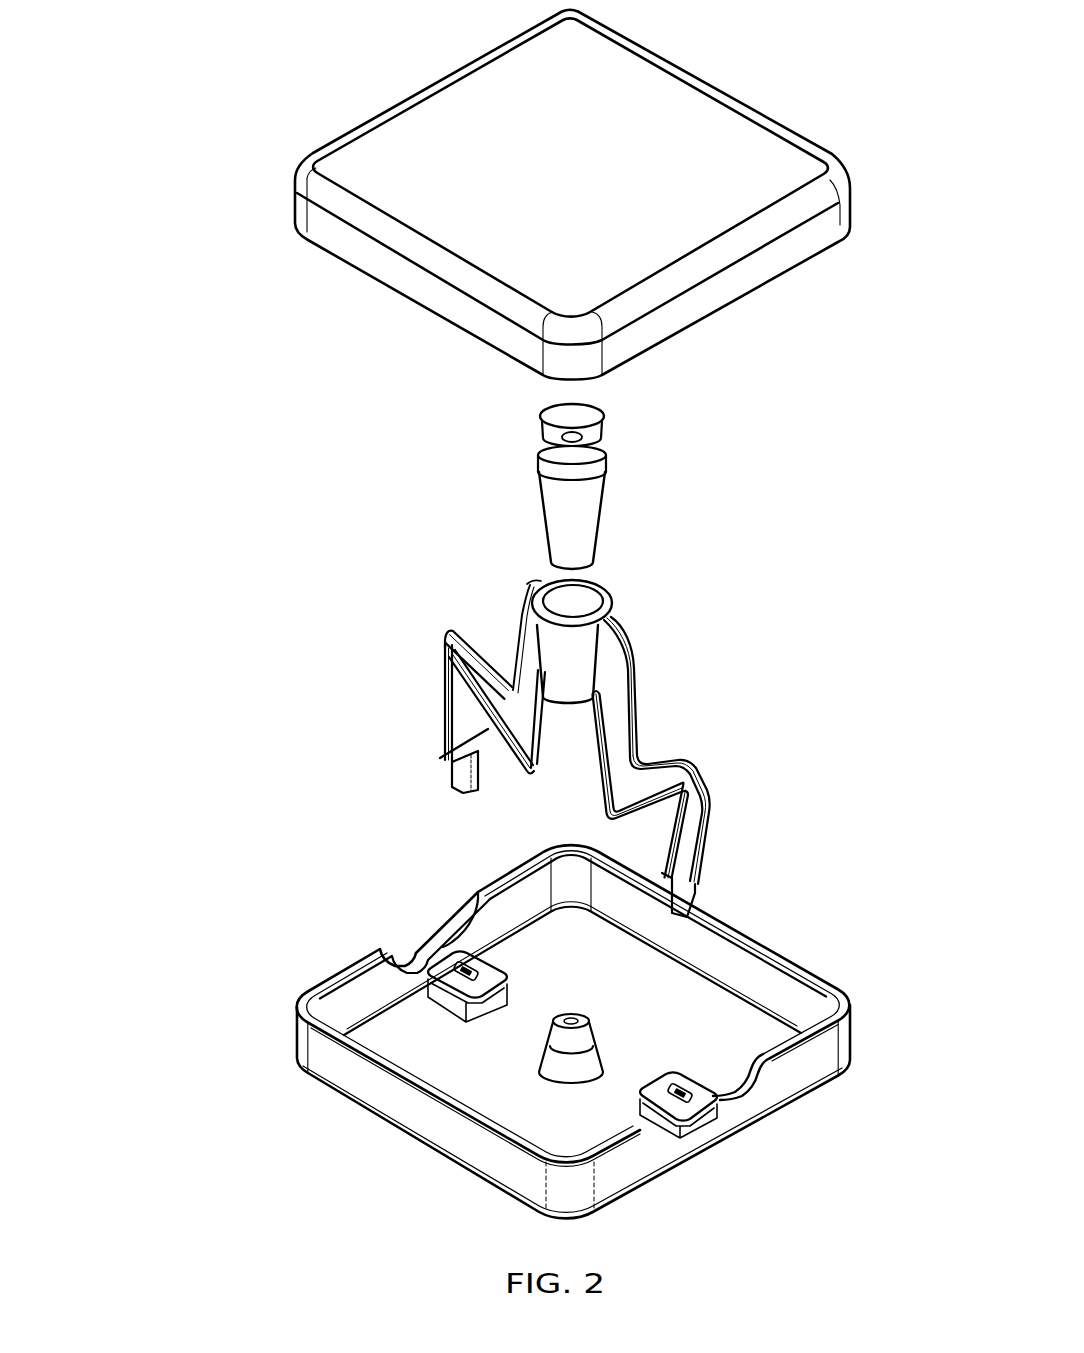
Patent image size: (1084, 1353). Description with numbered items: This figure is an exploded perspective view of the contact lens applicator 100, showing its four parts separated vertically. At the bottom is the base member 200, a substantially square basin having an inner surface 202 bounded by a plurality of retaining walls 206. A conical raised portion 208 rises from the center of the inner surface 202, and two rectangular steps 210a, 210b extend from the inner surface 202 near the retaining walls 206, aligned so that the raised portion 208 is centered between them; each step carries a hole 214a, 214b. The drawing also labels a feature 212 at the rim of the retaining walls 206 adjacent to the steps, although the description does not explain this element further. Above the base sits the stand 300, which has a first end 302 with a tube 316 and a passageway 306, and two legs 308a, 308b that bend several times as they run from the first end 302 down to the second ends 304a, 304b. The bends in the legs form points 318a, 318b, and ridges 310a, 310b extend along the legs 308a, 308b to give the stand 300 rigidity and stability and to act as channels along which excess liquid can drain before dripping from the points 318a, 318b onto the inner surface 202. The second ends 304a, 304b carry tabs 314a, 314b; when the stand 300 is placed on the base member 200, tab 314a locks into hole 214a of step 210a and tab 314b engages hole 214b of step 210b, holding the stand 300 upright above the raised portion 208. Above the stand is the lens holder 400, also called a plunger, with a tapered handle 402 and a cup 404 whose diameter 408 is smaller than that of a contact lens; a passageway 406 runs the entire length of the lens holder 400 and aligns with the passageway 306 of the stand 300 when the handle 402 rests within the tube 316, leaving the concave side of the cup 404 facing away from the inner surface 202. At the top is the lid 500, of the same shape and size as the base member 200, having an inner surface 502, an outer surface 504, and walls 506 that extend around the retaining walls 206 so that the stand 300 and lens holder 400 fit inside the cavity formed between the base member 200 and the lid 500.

The contact lens applicator 100 is at (496, 619).
The base member 200 is at (551, 1023).
The inner surface 202 is at (470, 1067).
The retaining walls 206 is at (337, 1010).
The raised portion 208 is at (565, 1047).
The step 210a is at (734, 1139).
The step 210b is at (483, 920).
The wall recess 212 is at (415, 960).
The hole 214a is at (713, 1110).
The hole 214b is at (475, 967).
The stand 300 is at (580, 743).
The first end 302 is at (602, 603).
The second end 304a is at (695, 943).
The second end 304b is at (458, 792).
The passageway 306 is at (575, 605).
The leg 308a is at (613, 726).
The leg 308b is at (462, 697).
The ridge 310a is at (700, 773).
The ridge 310b is at (445, 756).
The tab 314a is at (697, 888).
The tab 314b is at (452, 763).
The tube 316 is at (560, 650).
The point 318a is at (690, 823).
The point 318b is at (525, 773).
The lens holder 400 is at (559, 482).
The handle 402 is at (575, 535).
The cup 404 is at (588, 427).
The passageway 406 is at (572, 437).
The diameter 408 is at (607, 430).
The lid 500 is at (582, 200).
The inner surface 502 is at (460, 328).
The outer surface 504 is at (715, 203).
The walls 506 is at (405, 272).